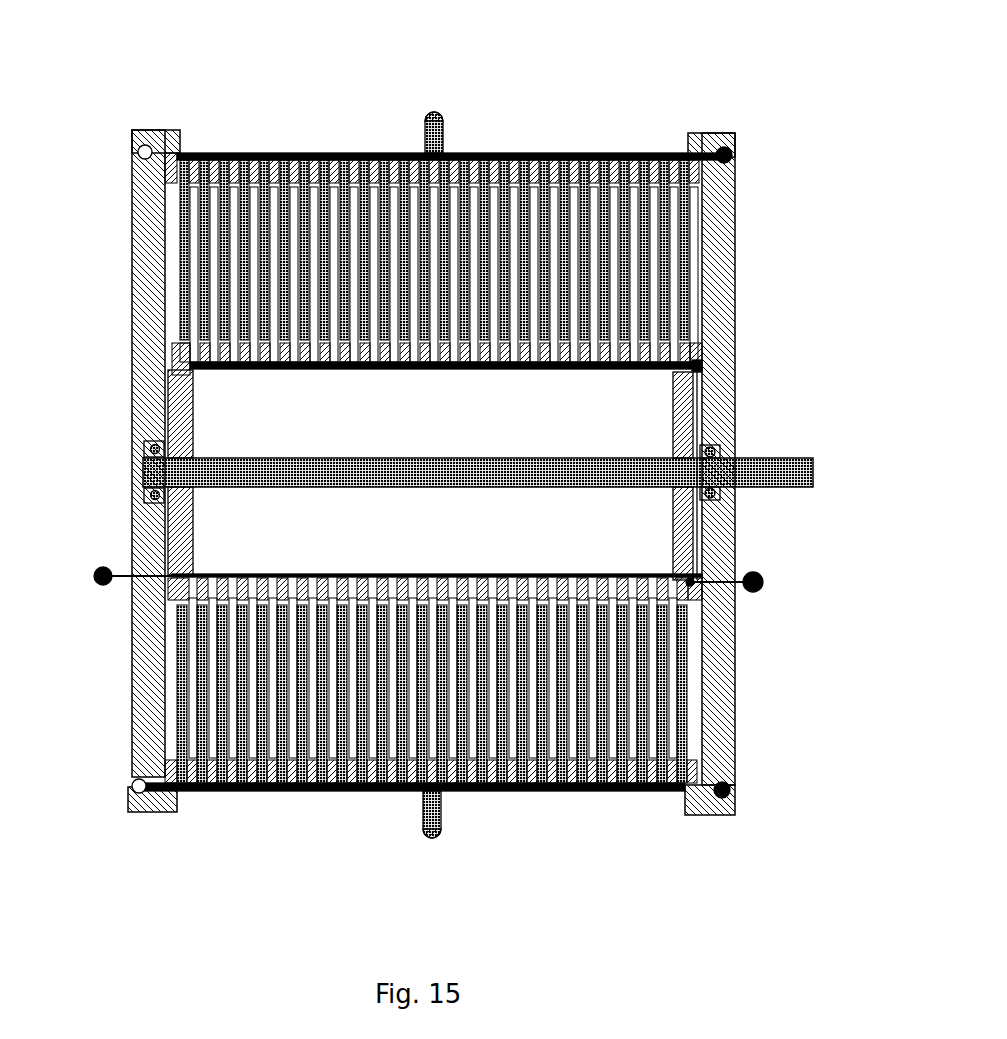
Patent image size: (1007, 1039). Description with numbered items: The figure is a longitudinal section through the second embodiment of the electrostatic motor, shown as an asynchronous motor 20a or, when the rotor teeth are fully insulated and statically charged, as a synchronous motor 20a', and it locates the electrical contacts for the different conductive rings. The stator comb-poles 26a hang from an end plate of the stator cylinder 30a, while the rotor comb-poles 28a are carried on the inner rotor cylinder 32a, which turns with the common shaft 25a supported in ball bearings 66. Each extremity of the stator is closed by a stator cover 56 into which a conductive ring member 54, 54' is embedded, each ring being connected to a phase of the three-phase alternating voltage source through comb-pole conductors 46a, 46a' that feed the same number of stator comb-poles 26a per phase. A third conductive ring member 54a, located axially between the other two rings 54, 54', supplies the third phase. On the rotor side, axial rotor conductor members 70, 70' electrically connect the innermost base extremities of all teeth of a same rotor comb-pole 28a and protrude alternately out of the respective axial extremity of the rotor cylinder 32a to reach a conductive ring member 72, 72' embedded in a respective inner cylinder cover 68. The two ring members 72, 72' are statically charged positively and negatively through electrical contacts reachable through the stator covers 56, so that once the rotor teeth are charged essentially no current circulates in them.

The asynchronous electrostatic motor 20a is at (759, 50).
The synchronous electrostatic motor 20a' is at (769, 913).
The common shaft 25a is at (782, 470).
The stator comb-poles 26a is at (685, 633).
The rotor comb-poles 28a is at (673, 266).
The stator cylinder 30a is at (690, 760).
The rotor cylinder 32a is at (443, 420).
The comb-pole conductor 46a is at (449, 110).
The comb-pole conductor 46a' is at (412, 813).
The conductive ring member 54 is at (770, 442).
The conductive ring member 54' is at (83, 463).
The third conductive ring member 54a is at (437, 112).
The stator cover 56 is at (128, 677).
The ball bearings 66 is at (132, 442).
The inner cylinder cover 68 is at (693, 405).
The axial rotor conductor member 70 is at (446, 390).
The axial rotor conductor member 70' is at (437, 551).
The conductive ring member 72 is at (779, 459).
The conductive ring member 72' is at (109, 458).